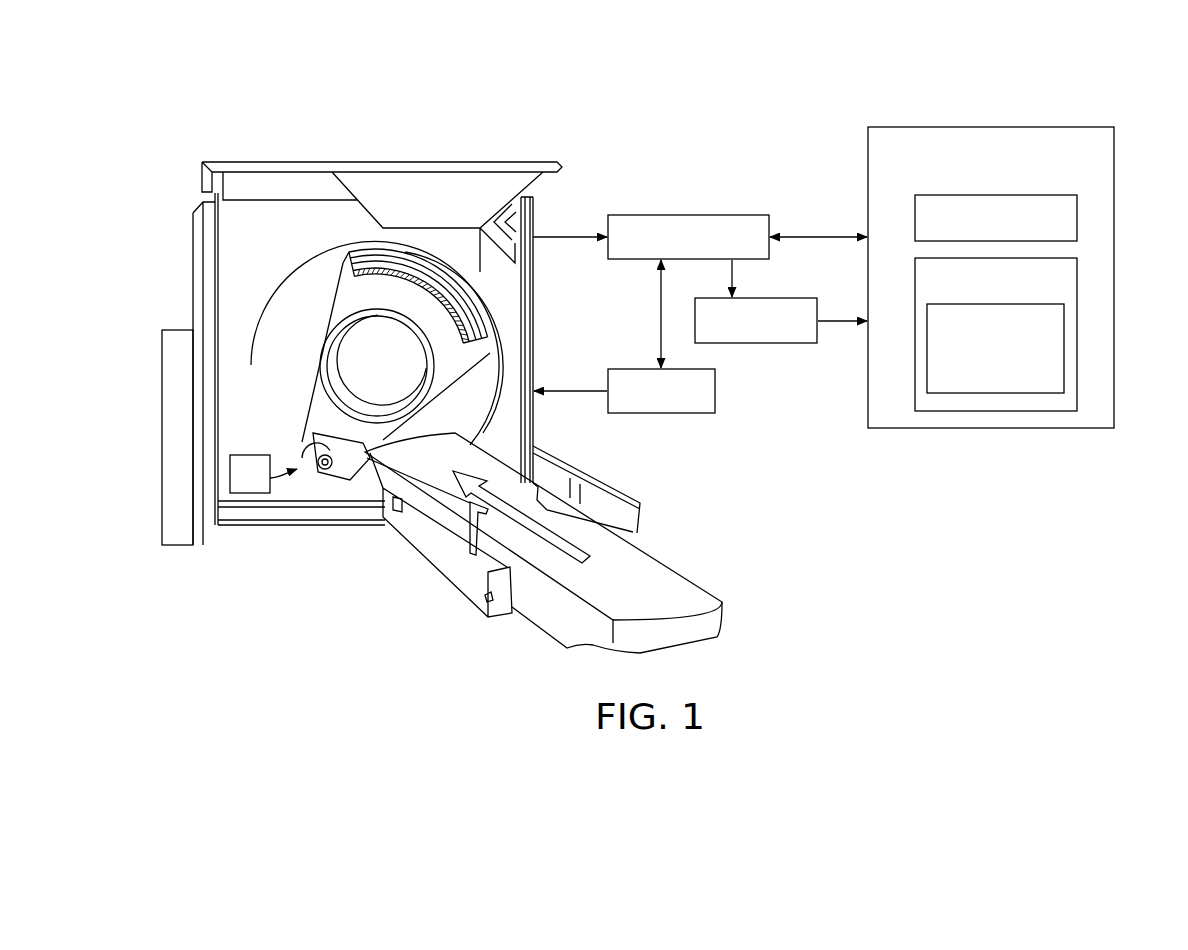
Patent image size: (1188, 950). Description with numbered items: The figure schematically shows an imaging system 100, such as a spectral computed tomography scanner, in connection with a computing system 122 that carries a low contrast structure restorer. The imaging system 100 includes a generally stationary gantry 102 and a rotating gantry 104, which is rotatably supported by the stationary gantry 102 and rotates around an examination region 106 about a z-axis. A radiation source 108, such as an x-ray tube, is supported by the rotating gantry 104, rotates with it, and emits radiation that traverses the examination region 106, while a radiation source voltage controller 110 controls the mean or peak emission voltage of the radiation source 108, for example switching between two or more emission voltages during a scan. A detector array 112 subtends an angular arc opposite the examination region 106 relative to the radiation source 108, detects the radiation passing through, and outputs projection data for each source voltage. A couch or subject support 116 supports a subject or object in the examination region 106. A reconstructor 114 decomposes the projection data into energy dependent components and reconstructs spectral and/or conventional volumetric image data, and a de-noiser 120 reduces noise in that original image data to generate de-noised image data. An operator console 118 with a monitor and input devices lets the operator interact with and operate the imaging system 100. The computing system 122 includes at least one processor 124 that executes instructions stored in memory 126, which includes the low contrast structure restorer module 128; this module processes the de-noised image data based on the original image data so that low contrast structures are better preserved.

The imaging system 100 is at (186, 121).
The stationary gantry 102 is at (196, 265).
The rotating gantry 104 is at (343, 263).
The examination region 106 is at (345, 369).
The radiation source 108 is at (320, 480).
The radiation source voltage controller 110 is at (262, 493).
The detector array 112 is at (410, 263).
The reconstructor 114 is at (687, 215).
The subject support 116 is at (675, 585).
The operator console 118 is at (662, 414).
The de-noiser 120 is at (752, 344).
The computing system 122 is at (992, 127).
The processor 124 is at (1077, 214).
The memory 126 is at (1077, 290).
The low contrast structure restorer module 128 is at (1064, 345).